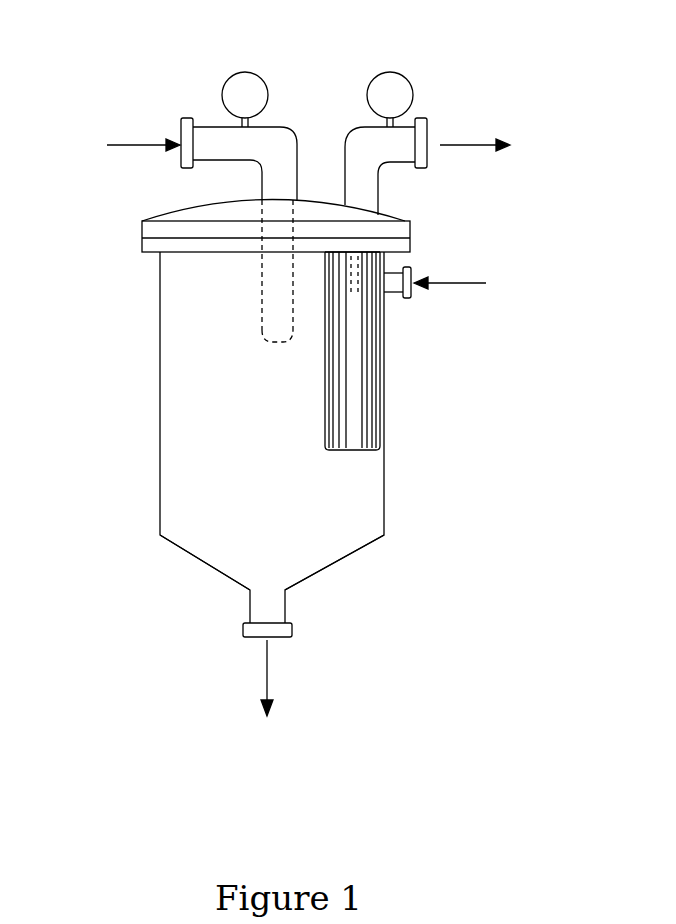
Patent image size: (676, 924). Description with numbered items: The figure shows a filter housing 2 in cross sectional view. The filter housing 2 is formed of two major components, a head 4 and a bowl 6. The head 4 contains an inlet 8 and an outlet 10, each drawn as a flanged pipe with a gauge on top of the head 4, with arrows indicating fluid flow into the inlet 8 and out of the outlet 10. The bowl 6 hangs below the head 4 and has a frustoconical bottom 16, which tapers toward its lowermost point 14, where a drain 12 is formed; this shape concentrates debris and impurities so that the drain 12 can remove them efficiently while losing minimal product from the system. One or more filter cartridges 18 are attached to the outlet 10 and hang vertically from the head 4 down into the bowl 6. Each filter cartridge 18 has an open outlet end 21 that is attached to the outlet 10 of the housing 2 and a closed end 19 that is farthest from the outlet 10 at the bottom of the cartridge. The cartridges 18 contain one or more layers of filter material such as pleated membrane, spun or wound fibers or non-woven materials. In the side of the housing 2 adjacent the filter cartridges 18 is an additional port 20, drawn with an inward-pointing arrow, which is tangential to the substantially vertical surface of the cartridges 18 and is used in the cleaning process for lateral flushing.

The filter housing 2 is at (452, 402).
The head 4 is at (145, 222).
The bowl 6 is at (161, 265).
The inlet 8 is at (207, 135).
The outlet 10 is at (398, 145).
The drain 12 is at (277, 610).
The lowermost point 14 is at (280, 640).
The frustoconical bottom 16 is at (277, 581).
The filter cartridge 18 is at (352, 352).
The closed end 19 is at (352, 452).
The port 20 is at (412, 270).
The open outlet end 21 is at (372, 254).